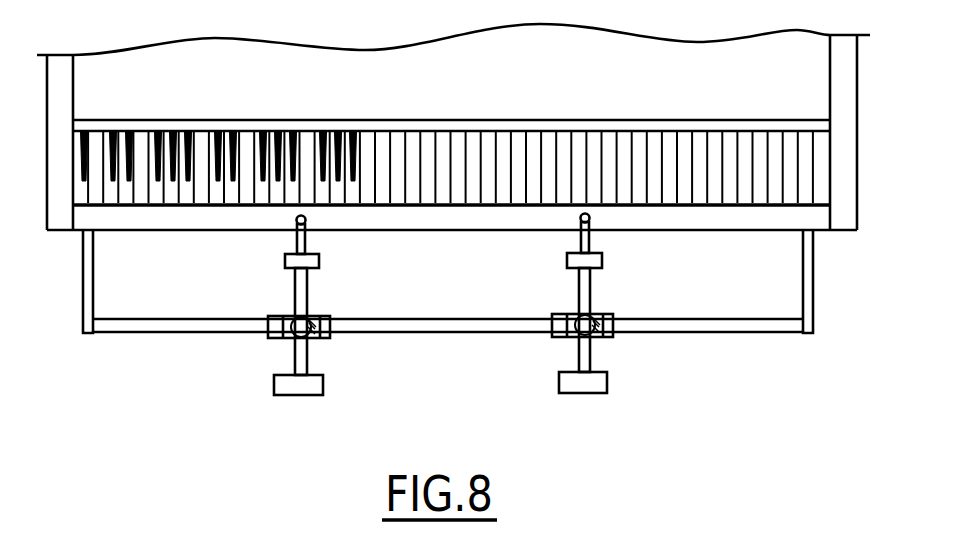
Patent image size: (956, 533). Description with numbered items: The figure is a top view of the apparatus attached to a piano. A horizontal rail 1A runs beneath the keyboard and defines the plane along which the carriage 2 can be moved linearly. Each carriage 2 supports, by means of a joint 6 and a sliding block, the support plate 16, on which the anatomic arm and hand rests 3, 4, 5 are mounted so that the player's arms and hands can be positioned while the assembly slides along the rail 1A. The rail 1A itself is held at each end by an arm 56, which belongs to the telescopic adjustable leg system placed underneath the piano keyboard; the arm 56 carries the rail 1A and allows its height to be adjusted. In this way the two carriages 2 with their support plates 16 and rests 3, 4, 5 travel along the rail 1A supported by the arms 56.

The rail 1A is at (713, 323).
The carriage 2 is at (328, 340).
The anatomic arm and hand rest 3 is at (292, 393).
The anatomic arm and hand rest 4 is at (285, 259).
The anatomic arm and hand rest 5 is at (292, 221).
The ball joint 6 is at (314, 320).
The support plate 16 is at (297, 350).
The arm 56 is at (85, 283).